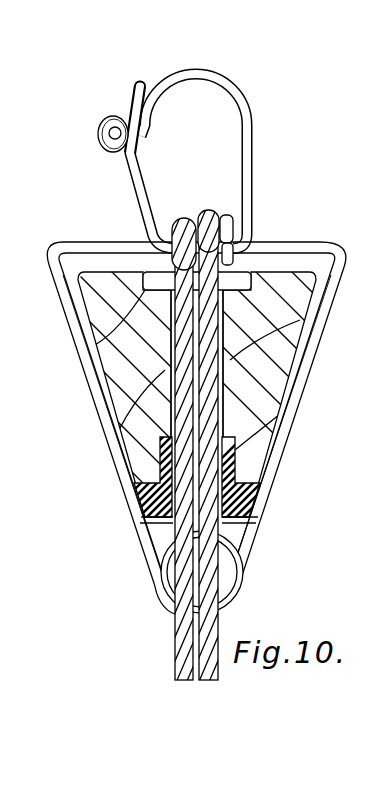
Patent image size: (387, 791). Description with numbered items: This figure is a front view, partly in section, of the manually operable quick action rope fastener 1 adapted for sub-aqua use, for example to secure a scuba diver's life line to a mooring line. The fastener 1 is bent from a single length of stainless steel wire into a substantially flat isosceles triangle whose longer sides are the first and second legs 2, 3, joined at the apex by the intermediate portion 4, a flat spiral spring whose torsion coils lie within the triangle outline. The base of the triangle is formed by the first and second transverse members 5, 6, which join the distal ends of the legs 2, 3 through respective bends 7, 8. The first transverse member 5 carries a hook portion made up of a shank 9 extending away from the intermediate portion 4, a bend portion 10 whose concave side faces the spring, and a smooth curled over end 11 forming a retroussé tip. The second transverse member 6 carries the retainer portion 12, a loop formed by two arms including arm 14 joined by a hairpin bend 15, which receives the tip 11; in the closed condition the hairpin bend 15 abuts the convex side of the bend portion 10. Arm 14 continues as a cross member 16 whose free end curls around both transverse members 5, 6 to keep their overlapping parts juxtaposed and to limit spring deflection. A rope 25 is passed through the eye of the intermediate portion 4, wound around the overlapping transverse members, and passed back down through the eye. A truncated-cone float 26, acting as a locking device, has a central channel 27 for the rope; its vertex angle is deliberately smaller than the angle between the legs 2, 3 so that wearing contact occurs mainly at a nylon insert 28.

The rope fastener 1 is at (194, 407).
The first leg 2 is at (83, 360).
The second leg 3 is at (308, 373).
The intermediate portion 4 is at (233, 587).
The first transverse member 5 is at (98, 240).
The second transverse member 6 is at (283, 240).
The bend 7 is at (62, 250).
The bend 8 is at (325, 252).
The shank 9 is at (255, 163).
The bend portion 10 is at (218, 77).
The curled over end 11 is at (98, 123).
The retainer portion 12 is at (133, 168).
The arm 14 is at (145, 188).
The hairpin bend 15 is at (139, 81).
The cross member 16 is at (173, 217).
The rope 25 is at (213, 528).
The float 26 is at (293, 332).
The central channel 27 is at (175, 398).
The nylon insert 28 is at (257, 493).